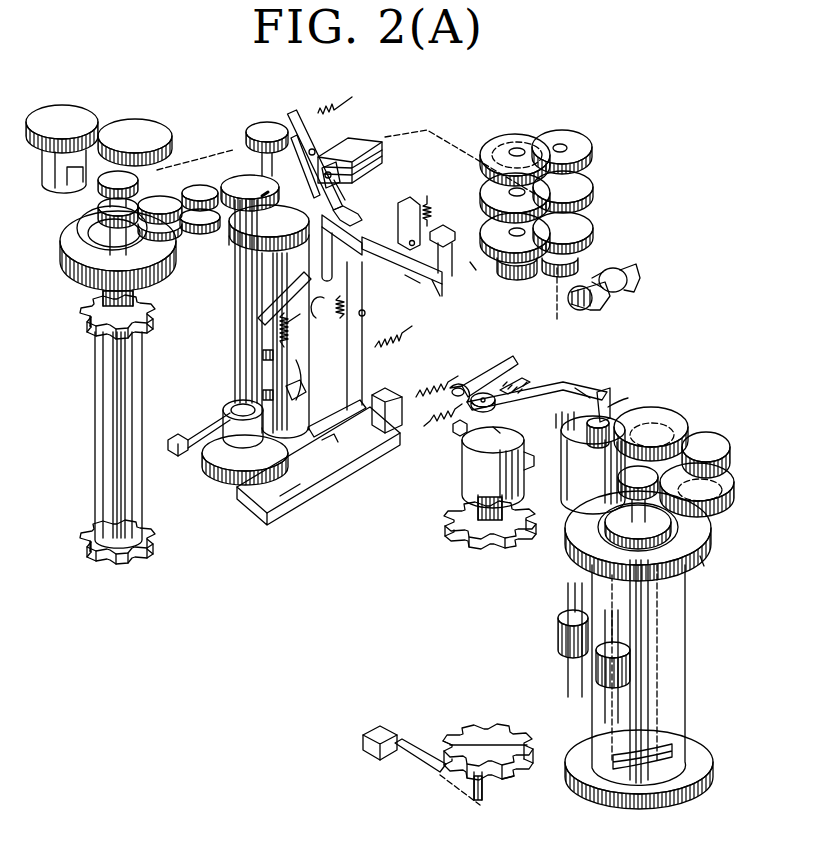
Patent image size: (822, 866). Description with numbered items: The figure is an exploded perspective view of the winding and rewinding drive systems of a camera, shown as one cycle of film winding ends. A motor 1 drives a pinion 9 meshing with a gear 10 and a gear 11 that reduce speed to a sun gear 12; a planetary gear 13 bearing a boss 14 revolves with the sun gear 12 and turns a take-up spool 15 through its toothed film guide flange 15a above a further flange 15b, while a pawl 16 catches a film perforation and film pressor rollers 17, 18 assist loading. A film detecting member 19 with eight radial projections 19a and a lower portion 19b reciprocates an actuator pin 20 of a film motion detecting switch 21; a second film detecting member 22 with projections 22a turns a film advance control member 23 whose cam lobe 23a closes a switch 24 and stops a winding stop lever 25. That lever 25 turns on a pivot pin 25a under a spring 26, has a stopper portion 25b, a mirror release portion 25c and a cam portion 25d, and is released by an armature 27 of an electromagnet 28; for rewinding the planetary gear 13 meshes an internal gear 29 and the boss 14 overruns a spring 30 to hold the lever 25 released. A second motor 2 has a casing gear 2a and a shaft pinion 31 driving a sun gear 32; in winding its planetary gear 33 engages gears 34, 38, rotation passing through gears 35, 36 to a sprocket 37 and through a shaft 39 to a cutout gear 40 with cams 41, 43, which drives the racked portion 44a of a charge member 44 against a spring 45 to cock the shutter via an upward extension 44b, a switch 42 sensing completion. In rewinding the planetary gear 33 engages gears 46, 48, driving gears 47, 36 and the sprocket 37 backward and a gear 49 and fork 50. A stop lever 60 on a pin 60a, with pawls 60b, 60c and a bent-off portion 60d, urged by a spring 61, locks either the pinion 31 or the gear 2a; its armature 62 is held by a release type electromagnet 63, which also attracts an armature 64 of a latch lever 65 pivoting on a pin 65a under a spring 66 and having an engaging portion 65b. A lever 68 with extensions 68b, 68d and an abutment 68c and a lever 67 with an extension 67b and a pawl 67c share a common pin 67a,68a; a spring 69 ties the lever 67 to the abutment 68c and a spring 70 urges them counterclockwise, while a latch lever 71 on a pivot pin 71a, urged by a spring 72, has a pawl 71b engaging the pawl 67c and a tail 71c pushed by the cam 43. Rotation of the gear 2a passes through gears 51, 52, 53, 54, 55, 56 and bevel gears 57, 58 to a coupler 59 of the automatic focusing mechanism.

The motor 1 is at (668, 528).
The second motor 2 is at (302, 242).
The gear on the casing 2a is at (228, 240).
The pinion 9 is at (632, 490).
The gear 10 is at (718, 504).
The gear 11 is at (715, 434).
The sun gear 12 is at (658, 410).
The planetary gear 13 is at (570, 492).
The boss 14 is at (603, 420).
The take-up spool 15 is at (686, 640).
The film guide flange 15a is at (702, 566).
The column base flange 15b is at (700, 745).
The pawl 16 is at (665, 754).
The film pressor roller 17 is at (597, 680).
The film pressor roller 18 is at (556, 638).
The film detecting member 19 is at (488, 725).
The radial projections 19a is at (446, 737).
The ratchet lower wheel 19b is at (515, 780).
The actuator pin 20 is at (472, 792).
The film motion detecting switch 21 is at (376, 762).
The film detecting member 22 is at (446, 530).
The radial projections 22a is at (482, 548).
The film advance control member 23 is at (462, 470).
The cam lobe 23a is at (528, 452).
The switch 24 is at (458, 434).
The winding stop lever 25 is at (560, 385).
The pivot pin 25a is at (458, 388).
The stopper portion 25b is at (490, 441).
The mirror release portion 25c is at (505, 358).
The cam portion 25d is at (605, 390).
The spring 26 is at (437, 412).
The armature 27 is at (483, 393).
The electromagnet 28 is at (518, 380).
The internal gear 29 is at (566, 432).
The spring 30 is at (588, 393).
The pinion 31 is at (267, 120).
The sun gear 32 is at (60, 255).
The planetary gear 33 is at (200, 185).
The gear 34 is at (188, 228).
The gear 35 is at (165, 195).
The gear 36 is at (78, 226).
The sprocket 37 is at (95, 385).
The gear 38 is at (235, 178).
The shaft 39 is at (240, 330).
The cutout gear 40 is at (212, 478).
The cam 41 is at (225, 406).
The switch 42 is at (176, 436).
The cam 43 is at (300, 392).
The charge member 44 is at (250, 514).
The racked portion 44a is at (290, 500).
The upward extension 44b is at (388, 440).
The spring 45 is at (440, 380).
The gear 46 is at (98, 205).
The gear 47 is at (120, 170).
The gear 48 is at (140, 118).
The gear 49 is at (68, 107).
The fork 50 is at (42, 178).
The gear 51 is at (512, 132).
The gear 52 is at (562, 128).
The gear 53 is at (482, 192).
The gear 54 is at (592, 188).
The gear 55 is at (482, 236).
The gear 56 is at (592, 228).
The bevel gear 57 is at (523, 274).
The bevel gear 58 is at (585, 312).
The coupler 59 is at (630, 272).
The stop lever 60 is at (330, 150).
The pivot pin 60a is at (338, 168).
The pawl 60b is at (296, 108).
The second pawl 60c is at (272, 194).
The bent-off portion 60d is at (358, 214).
The spring 61 is at (325, 104).
The armature 62 is at (306, 170).
The release type electromagnet 63 is at (370, 145).
The armature 64 is at (413, 200).
The latch lever 65 is at (445, 283).
The pivot pin 65a is at (440, 296).
The engaging portion 65b is at (448, 228).
The spring 66 is at (428, 202).
The lever 67 is at (350, 242).
The pivot pin 67a,68a is at (366, 313).
The extension 67b is at (328, 250).
The pawl 67c is at (322, 305).
The lever 68 is at (362, 375).
The extension 68b is at (476, 272).
The abutment 68c is at (415, 280).
The extension 68d is at (330, 440).
The spring 69 is at (344, 306).
The spring 70 is at (398, 340).
The latch lever 71 is at (274, 362).
The pivot pin 71a is at (262, 318).
The pawl 71b is at (292, 326).
The tail 71c is at (300, 378).
The spring 72 is at (288, 330).